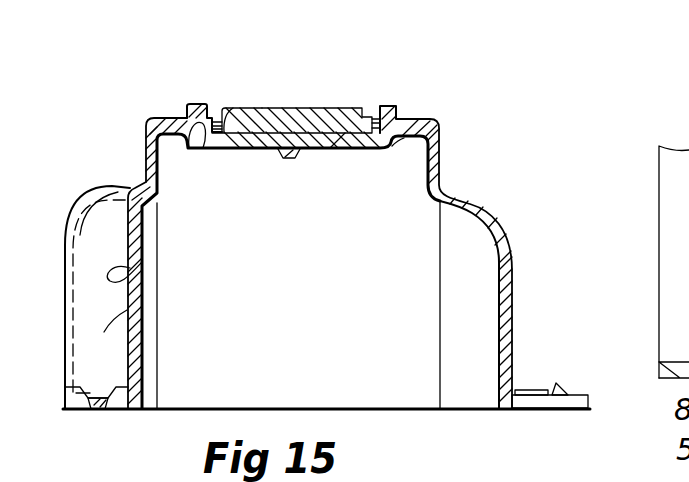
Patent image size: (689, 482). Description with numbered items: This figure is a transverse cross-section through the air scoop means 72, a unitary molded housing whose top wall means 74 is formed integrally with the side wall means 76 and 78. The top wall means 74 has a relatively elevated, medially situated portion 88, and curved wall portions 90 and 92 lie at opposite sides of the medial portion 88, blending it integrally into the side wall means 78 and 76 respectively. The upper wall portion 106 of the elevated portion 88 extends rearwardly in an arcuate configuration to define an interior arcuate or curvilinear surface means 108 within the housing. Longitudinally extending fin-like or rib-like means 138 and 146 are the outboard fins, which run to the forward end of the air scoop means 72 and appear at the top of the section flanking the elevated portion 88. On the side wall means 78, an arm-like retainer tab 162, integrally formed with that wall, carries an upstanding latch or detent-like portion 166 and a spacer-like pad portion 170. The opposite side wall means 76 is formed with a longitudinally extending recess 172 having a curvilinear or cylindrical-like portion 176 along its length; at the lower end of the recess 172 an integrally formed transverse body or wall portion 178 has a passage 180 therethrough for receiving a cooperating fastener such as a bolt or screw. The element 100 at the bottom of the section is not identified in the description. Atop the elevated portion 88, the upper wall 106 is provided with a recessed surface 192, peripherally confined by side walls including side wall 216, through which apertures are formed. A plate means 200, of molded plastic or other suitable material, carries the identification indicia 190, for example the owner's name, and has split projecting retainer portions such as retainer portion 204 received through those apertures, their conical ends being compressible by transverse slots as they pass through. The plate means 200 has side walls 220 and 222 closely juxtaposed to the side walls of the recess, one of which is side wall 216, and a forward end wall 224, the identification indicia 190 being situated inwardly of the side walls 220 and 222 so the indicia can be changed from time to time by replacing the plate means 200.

The air scoop means 72 is at (494, 145).
The top wall means 74 is at (438, 115).
The side wall means 76 is at (56, 333).
The side wall means 78 is at (521, 256).
The medially situated portion 88 is at (442, 153).
The curved wall portion 90 is at (452, 196).
The curved wall portion 92 is at (106, 186).
The base plate 100 is at (389, 410).
The upper wall portion 106 is at (408, 150).
The interior arcuate surface means 108 is at (274, 341).
The fin-like means 138 is at (198, 103).
The fin-like means 146 is at (395, 104).
The retainer means 162 is at (559, 404).
The latch portion 166 is at (561, 388).
The spacer-like pad portion 170 is at (534, 390).
The recess 172 is at (127, 310).
The cylindrical-like portion 176 is at (130, 268).
The transverse wall portion 178 is at (80, 389).
The passage 180 is at (104, 410).
The identification indicia 190 is at (373, 106).
The recessed surface 192 is at (264, 106).
The plate means 200 is at (288, 95).
The retainer portion 204 is at (290, 160).
The side wall 216 is at (341, 150).
The side wall 220 is at (213, 157).
The side wall 222 is at (377, 136).
The forward end wall 224 is at (243, 106).